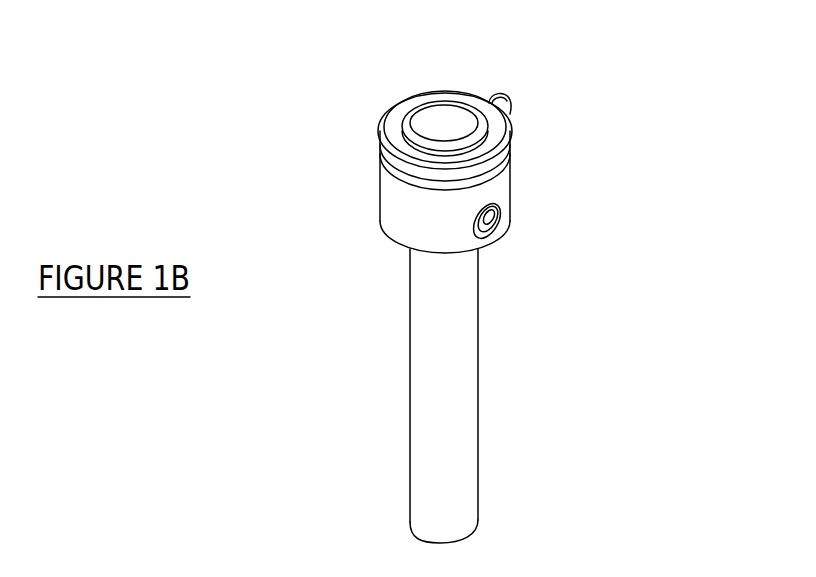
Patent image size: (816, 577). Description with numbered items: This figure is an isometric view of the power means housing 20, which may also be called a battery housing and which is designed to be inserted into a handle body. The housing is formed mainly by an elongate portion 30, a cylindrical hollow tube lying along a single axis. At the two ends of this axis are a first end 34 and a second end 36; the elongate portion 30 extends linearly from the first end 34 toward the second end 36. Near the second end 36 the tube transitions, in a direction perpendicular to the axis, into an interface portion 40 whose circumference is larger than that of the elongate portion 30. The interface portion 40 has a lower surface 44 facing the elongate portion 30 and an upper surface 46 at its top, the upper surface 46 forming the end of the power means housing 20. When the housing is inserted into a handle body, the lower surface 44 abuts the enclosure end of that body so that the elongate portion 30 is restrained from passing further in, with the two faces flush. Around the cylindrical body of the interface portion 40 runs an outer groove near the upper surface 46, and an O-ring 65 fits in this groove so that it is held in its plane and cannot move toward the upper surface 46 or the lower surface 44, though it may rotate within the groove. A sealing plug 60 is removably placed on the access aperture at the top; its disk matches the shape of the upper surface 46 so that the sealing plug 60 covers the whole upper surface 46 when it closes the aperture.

The power means housing 20 is at (645, 197).
The elongate portion 30 is at (458, 411).
The first end 34 is at (460, 540).
The second end 36 is at (410, 252).
The interface portion 40 is at (393, 208).
The lower surface 44 is at (493, 247).
The upper surface 46 is at (445, 122).
The sealing plug 60 is at (490, 133).
The O-ring 65 is at (510, 173).